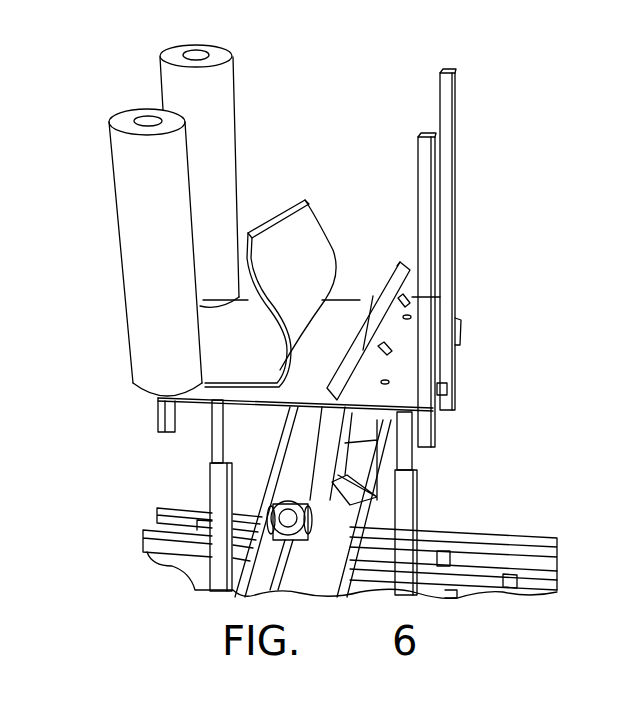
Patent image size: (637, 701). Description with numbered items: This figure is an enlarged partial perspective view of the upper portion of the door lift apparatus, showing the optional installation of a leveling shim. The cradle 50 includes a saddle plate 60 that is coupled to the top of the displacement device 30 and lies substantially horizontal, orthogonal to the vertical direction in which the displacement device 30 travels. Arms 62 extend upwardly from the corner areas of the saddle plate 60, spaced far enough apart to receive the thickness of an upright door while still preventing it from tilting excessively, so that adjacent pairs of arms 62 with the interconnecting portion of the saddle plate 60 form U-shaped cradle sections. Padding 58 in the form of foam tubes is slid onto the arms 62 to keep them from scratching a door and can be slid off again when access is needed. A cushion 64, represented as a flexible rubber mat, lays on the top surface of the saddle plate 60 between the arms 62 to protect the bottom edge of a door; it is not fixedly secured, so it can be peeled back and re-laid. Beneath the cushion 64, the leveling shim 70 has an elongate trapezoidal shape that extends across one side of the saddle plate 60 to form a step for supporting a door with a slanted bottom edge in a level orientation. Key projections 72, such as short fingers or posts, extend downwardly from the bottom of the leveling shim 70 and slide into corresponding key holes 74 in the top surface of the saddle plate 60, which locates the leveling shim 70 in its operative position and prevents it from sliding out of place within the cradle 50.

The displacement device 30 is at (345, 501).
The cradle 50 is at (440, 418).
The padding 58 is at (163, 53).
The saddle plate 60 is at (318, 371).
The arms 62 is at (425, 177).
The cushion 64 is at (292, 283).
The leveling shim 70 is at (377, 300).
The key projections 72 is at (406, 299).
The key holes 74 is at (411, 317).